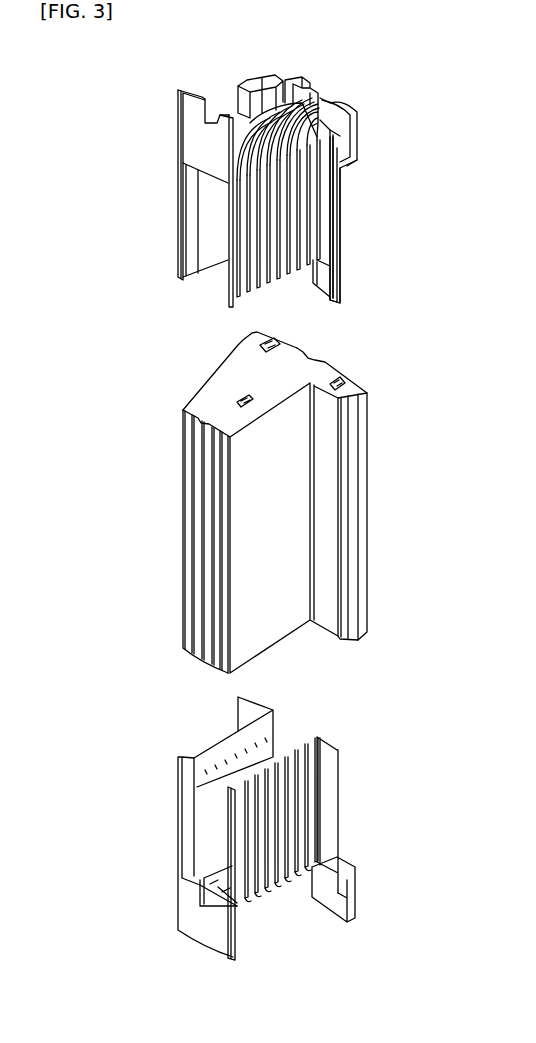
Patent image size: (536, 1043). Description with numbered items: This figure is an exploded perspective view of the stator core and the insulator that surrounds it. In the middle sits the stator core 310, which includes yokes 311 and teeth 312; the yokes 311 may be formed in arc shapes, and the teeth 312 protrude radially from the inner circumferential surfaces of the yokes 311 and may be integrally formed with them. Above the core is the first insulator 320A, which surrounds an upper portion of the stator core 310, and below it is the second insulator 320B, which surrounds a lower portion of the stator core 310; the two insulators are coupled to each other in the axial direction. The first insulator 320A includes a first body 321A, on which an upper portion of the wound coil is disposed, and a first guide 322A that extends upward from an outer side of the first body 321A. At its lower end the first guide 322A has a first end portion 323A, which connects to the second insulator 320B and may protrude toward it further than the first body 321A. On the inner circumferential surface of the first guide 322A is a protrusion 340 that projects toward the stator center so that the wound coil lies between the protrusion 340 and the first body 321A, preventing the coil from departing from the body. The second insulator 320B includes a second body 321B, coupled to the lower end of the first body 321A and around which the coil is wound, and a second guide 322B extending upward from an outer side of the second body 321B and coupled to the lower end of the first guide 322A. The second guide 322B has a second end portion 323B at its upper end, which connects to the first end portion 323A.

The stator core 310 is at (312, 500).
The yokes 311 is at (322, 373).
The teeth 312 is at (220, 402).
The first insulator 320A is at (321, 170).
The first body 321A is at (242, 92).
The first guide 322A is at (363, 74).
The first end portion 323A is at (337, 283).
The protrusion 340 is at (342, 243).
The second insulator 320B is at (311, 829).
The second body 321B is at (273, 882).
The second guide 322B is at (328, 895).
The second end portion 323B is at (328, 772).